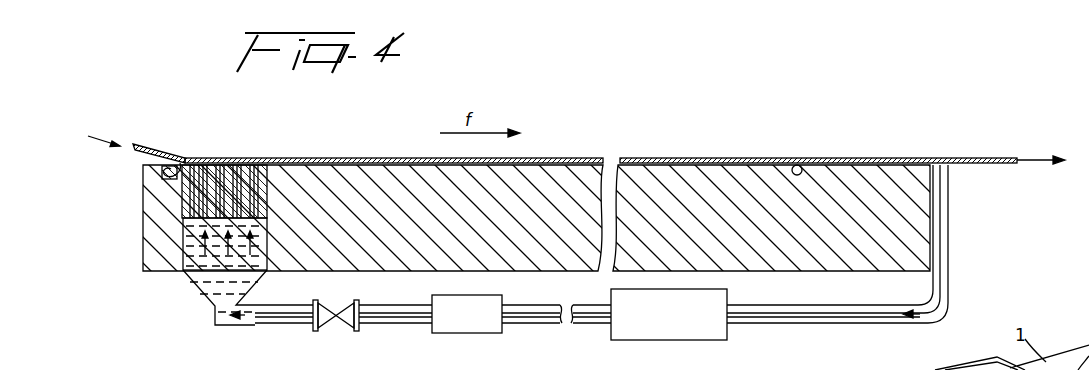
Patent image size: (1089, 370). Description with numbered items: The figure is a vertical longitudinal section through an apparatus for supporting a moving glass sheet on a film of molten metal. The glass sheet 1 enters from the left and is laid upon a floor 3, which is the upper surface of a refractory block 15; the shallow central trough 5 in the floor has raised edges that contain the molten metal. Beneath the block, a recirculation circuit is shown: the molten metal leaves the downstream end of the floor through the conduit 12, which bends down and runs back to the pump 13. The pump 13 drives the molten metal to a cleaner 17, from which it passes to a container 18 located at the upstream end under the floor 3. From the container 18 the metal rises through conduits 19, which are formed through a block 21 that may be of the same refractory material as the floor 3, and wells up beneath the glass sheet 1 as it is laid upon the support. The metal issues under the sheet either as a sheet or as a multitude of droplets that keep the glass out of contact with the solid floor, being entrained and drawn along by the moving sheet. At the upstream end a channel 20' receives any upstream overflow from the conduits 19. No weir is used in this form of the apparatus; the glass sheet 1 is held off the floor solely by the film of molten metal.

The glass sheet 1 is at (163, 151).
The floor 3 is at (803, 168).
The shallow central trough 5 is at (600, 130).
The conduit 12 is at (950, 232).
The pump 13 is at (684, 332).
The refractory block 15 is at (828, 220).
The cleaner 17 is at (463, 325).
The container 18 is at (212, 272).
The conduits 19 is at (247, 178).
The channel 20' is at (129, 181).
The block 21 is at (225, 178).